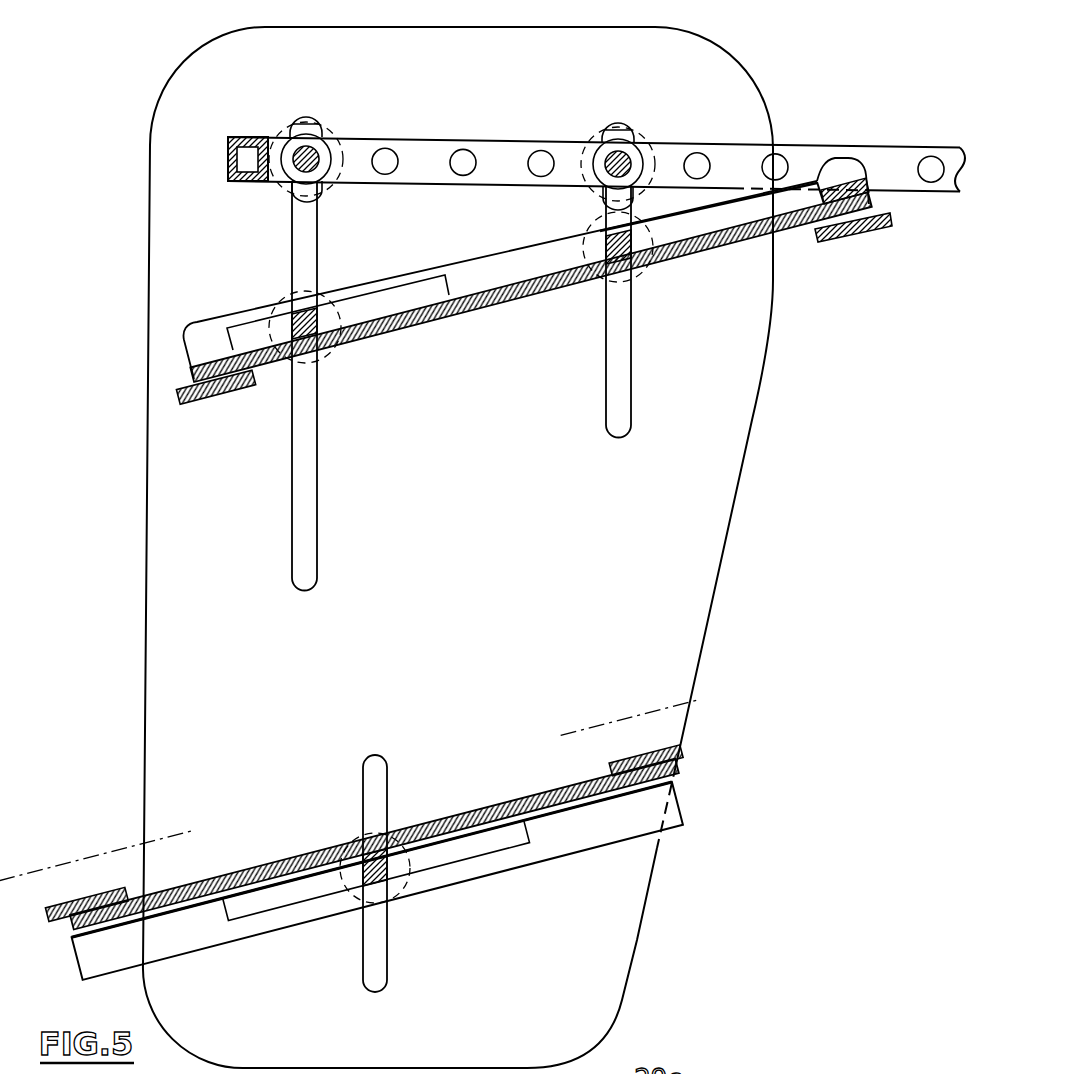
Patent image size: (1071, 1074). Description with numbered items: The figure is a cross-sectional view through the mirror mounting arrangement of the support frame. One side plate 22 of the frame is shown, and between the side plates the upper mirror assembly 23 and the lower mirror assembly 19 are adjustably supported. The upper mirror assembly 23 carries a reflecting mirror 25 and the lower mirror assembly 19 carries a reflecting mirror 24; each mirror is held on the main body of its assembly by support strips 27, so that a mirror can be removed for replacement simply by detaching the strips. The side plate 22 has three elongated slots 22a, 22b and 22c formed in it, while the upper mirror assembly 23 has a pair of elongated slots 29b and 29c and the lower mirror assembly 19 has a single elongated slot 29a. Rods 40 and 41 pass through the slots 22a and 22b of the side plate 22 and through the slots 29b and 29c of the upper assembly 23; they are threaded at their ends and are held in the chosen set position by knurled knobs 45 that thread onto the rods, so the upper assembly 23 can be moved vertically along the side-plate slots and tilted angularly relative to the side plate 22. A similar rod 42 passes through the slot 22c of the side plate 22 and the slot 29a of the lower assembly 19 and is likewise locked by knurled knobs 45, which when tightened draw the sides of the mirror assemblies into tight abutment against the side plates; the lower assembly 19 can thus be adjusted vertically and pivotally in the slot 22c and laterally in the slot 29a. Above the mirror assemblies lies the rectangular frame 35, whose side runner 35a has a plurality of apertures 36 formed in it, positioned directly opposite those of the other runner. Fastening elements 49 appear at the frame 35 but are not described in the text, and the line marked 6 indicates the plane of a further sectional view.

The lower mirror support assembly 19 is at (587, 817).
The side plate 22 is at (708, 490).
The elongated slot 22a is at (295, 500).
The elongated slot 22b is at (606, 378).
The elongated slot 22c is at (389, 770).
The upper mirror support assembly 23 is at (536, 262).
The reflecting mirror 24 is at (523, 798).
The reflecting mirror 25 is at (553, 300).
The support strip 27 is at (858, 232).
The elongated slot 29a is at (292, 907).
The elongated slot 29b is at (423, 296).
The elongated slot 29c is at (718, 218).
The rectangular frame 35 is at (242, 132).
The side runner 35a is at (887, 150).
The aperture 36 is at (386, 151).
The rod 40 is at (298, 314).
The rod 41 is at (632, 254).
The rod 42 is at (386, 876).
The knurled knob 45 is at (313, 122).
The bolt 49 is at (300, 153).
The section line 6- 6 is at (52, 886).